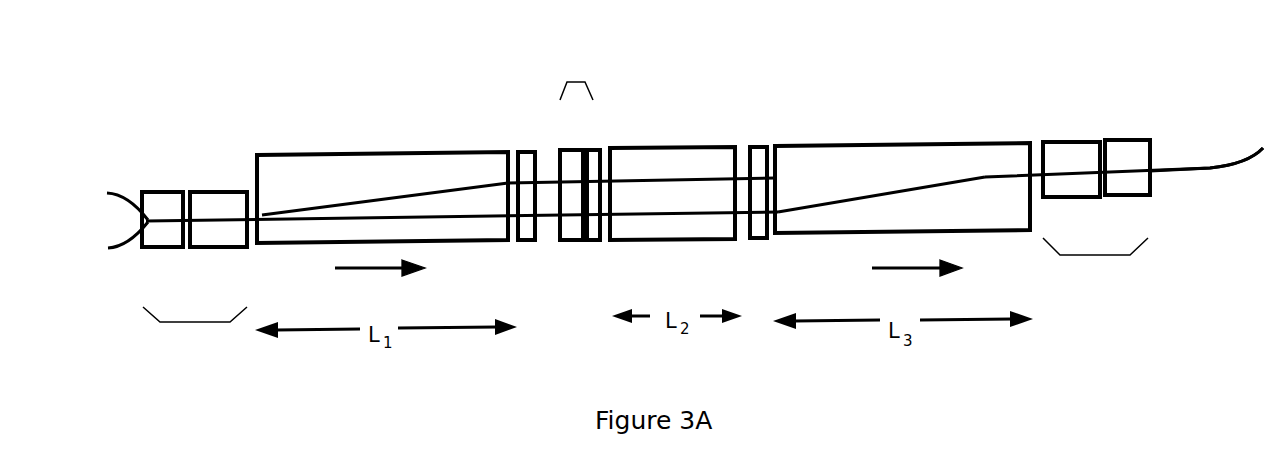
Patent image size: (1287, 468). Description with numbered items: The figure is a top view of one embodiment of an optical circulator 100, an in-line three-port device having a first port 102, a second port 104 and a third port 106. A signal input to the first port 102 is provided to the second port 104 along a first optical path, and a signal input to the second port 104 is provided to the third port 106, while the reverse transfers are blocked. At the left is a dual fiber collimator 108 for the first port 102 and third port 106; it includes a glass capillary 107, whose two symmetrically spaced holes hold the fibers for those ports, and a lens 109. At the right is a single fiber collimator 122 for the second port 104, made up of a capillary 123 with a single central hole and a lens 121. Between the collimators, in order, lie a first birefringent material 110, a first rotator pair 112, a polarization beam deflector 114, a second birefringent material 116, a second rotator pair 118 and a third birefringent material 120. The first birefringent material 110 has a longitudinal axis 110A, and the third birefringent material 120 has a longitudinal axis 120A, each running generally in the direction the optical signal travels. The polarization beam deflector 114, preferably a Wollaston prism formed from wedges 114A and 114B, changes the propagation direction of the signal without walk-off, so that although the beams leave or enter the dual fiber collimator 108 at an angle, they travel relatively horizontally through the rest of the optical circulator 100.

The optical circulator 100 is at (668, 22).
The first port 102 is at (114, 200).
The second port 104 is at (1215, 172).
The third port 106 is at (113, 233).
The capillary 107 is at (162, 192).
The dual fiber collimator 108 is at (195, 322).
The lens 109 is at (200, 249).
The first birefringent material 110 is at (330, 155).
The longitudinal axis 110A is at (388, 271).
The first rotator pair 112 is at (527, 152).
The polarization beam deflector 114 is at (575, 78).
The wedge 114A is at (562, 150).
The wedge 114B is at (595, 240).
The second birefringent material 116 is at (645, 148).
The second rotator pair 118 is at (762, 148).
The third birefringent material 120 is at (837, 145).
The longitudinal axis 120A is at (923, 271).
The lens 121 is at (1080, 142).
The single fiber collimator 122 is at (1095, 255).
The capillary 123 is at (1127, 140).